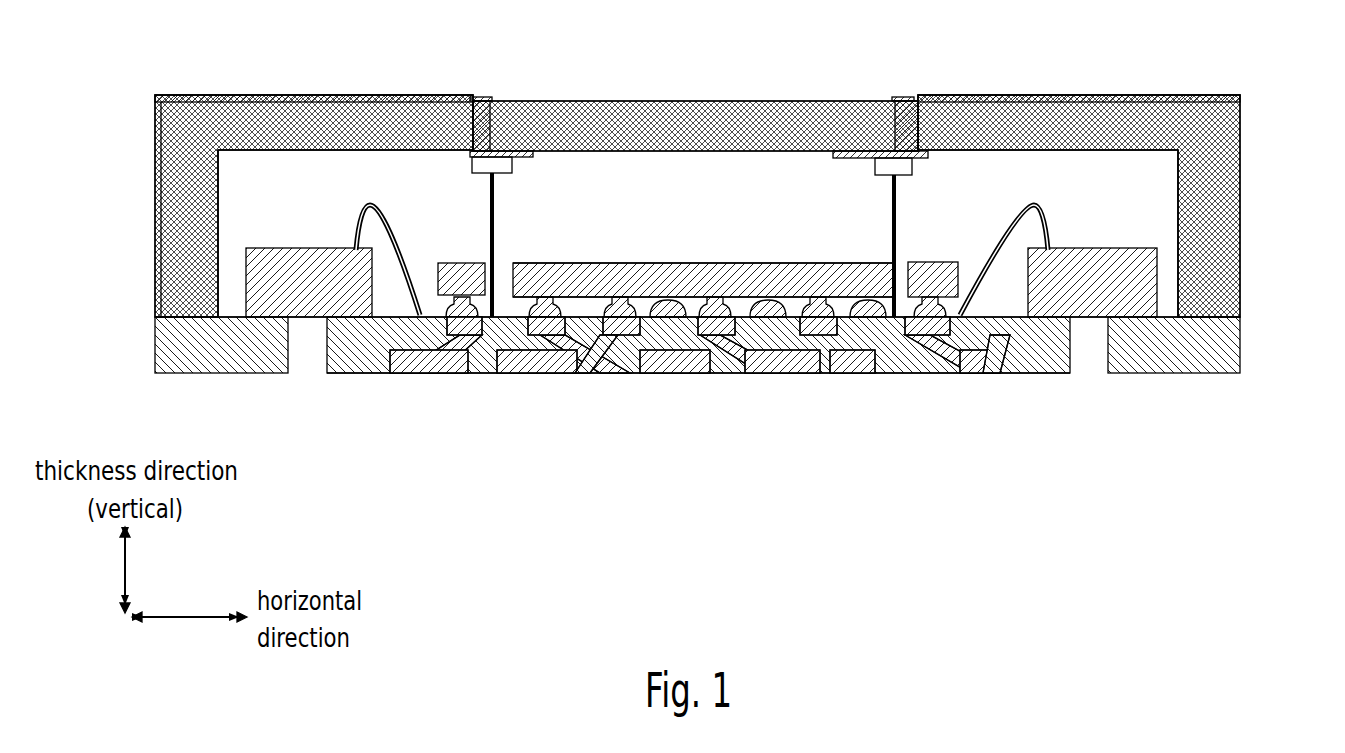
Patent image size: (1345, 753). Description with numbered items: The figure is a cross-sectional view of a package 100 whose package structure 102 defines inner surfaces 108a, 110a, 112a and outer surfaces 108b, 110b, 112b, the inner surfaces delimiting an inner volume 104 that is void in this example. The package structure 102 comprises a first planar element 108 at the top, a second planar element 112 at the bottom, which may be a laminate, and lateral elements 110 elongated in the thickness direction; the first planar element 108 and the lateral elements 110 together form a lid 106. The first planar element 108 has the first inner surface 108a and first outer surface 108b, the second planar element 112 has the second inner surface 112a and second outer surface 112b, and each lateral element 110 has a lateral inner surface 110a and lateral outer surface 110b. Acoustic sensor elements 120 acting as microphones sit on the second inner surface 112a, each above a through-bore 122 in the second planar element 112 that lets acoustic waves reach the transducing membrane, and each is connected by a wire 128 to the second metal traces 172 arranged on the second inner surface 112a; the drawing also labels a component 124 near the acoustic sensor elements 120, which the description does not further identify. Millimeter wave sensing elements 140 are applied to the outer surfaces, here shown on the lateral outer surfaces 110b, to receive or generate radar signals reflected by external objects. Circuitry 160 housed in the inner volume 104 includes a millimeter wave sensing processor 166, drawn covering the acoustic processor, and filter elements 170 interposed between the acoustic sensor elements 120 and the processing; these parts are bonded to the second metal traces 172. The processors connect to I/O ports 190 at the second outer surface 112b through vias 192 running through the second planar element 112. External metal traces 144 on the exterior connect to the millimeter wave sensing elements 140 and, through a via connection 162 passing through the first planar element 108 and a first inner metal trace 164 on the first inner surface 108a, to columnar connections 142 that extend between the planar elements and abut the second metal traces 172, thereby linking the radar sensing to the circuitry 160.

The package 100 is at (742, 473).
The package structure 102 is at (733, 98).
The inner volume 104 is at (775, 194).
The lid 106 is at (792, 101).
The first planar element 108 is at (643, 101).
The first inner surface 108a is at (667, 152).
The first outer surface 108b is at (700, 101).
The lateral element 110 is at (158, 247).
The lateral inner surface 110a is at (223, 177).
The lateral outer surface 110b is at (158, 302).
The second planar element 112 is at (910, 377).
The second inner surface 112a is at (232, 313).
The second outer surface 112b is at (595, 377).
The acoustic sensor element 120 is at (298, 376).
The through-bore 122 is at (310, 378).
The first semiconductor chip 124 is at (302, 257).
The wire 128 is at (373, 210).
The millimeter wave sensing element 140 is at (152, 150).
The columnar connection 142 is at (490, 185).
The external metal trace 144 is at (275, 95).
The circuitry 160 is at (613, 258).
The via connection 162 is at (468, 97).
The first inner metal trace 164 is at (527, 155).
The millimeter wave sensing processor 166 is at (837, 377).
The filter element 170 is at (415, 378).
The second metal traces 172 is at (420, 313).
The I/O ports 190 is at (540, 378).
The via 192 is at (613, 377).